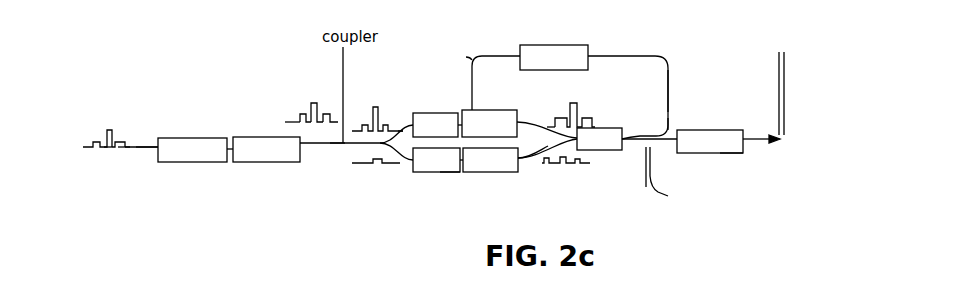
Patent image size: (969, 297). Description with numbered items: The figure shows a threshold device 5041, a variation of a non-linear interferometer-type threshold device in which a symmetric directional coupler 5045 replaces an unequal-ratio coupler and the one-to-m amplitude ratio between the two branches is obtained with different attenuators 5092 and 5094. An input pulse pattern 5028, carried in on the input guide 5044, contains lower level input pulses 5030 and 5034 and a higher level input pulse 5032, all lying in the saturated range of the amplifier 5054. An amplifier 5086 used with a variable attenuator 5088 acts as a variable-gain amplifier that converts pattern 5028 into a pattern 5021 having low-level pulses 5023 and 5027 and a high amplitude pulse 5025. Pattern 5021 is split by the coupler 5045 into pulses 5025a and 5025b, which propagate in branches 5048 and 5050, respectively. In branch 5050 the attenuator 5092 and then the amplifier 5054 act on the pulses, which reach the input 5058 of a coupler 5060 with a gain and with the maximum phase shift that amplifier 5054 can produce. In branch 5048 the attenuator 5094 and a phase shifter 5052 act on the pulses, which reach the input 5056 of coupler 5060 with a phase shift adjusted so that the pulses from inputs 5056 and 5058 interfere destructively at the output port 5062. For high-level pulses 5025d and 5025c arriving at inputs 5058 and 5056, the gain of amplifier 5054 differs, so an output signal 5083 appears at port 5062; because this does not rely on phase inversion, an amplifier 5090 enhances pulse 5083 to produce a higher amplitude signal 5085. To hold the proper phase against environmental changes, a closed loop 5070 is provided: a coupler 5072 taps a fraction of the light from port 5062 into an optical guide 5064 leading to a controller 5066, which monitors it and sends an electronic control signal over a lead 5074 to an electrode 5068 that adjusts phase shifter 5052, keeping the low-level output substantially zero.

The pattern 5021 is at (284, 122).
The low-level pulse 5023 is at (301, 108).
The high amplitude pulse 5025 is at (311, 104).
The low-level pulse 5027 is at (328, 112).
The input pulse pattern 5028 is at (110, 150).
The lower level input pulse 5030 is at (93, 140).
The higher level input pulse 5032 is at (133, 113).
The lower level input pulse 5034 is at (197, 120).
The threshold device 5041 is at (700, 86).
The input fiber 5044 is at (142, 148).
The symmetric directional coupler 5045 is at (337, 144).
The branch 5048 is at (403, 124).
The branch 5050 is at (413, 157).
The phase shifter 5052 is at (496, 103).
The amplifier 5054 is at (477, 172).
The input 5056 is at (547, 127).
The input 5058 is at (522, 162).
The coupler 5060 is at (610, 150).
The output port 5062 is at (677, 153).
The optical guide 5064 is at (668, 103).
The controller 5066 is at (588, 65).
The electrode 5068 is at (474, 108).
The closed loop 5070 is at (653, 56).
The coupler 5072 is at (668, 124).
The lead 5074 is at (466, 57).
The output signal 5083 is at (677, 179).
The higher amplitude signal 5085 is at (787, 105).
The amplifier 5086 is at (197, 162).
The variable attenuator 5088 is at (268, 162).
The amplifier 5090 is at (747, 153).
The attenuator 5092 is at (452, 172).
The attenuator 5094 is at (450, 113).
The pulse 5025a is at (366, 106).
The pulse 5025b is at (377, 166).
The high-level pulse 5025c is at (578, 115).
The high-level pulse 5025d is at (562, 165).